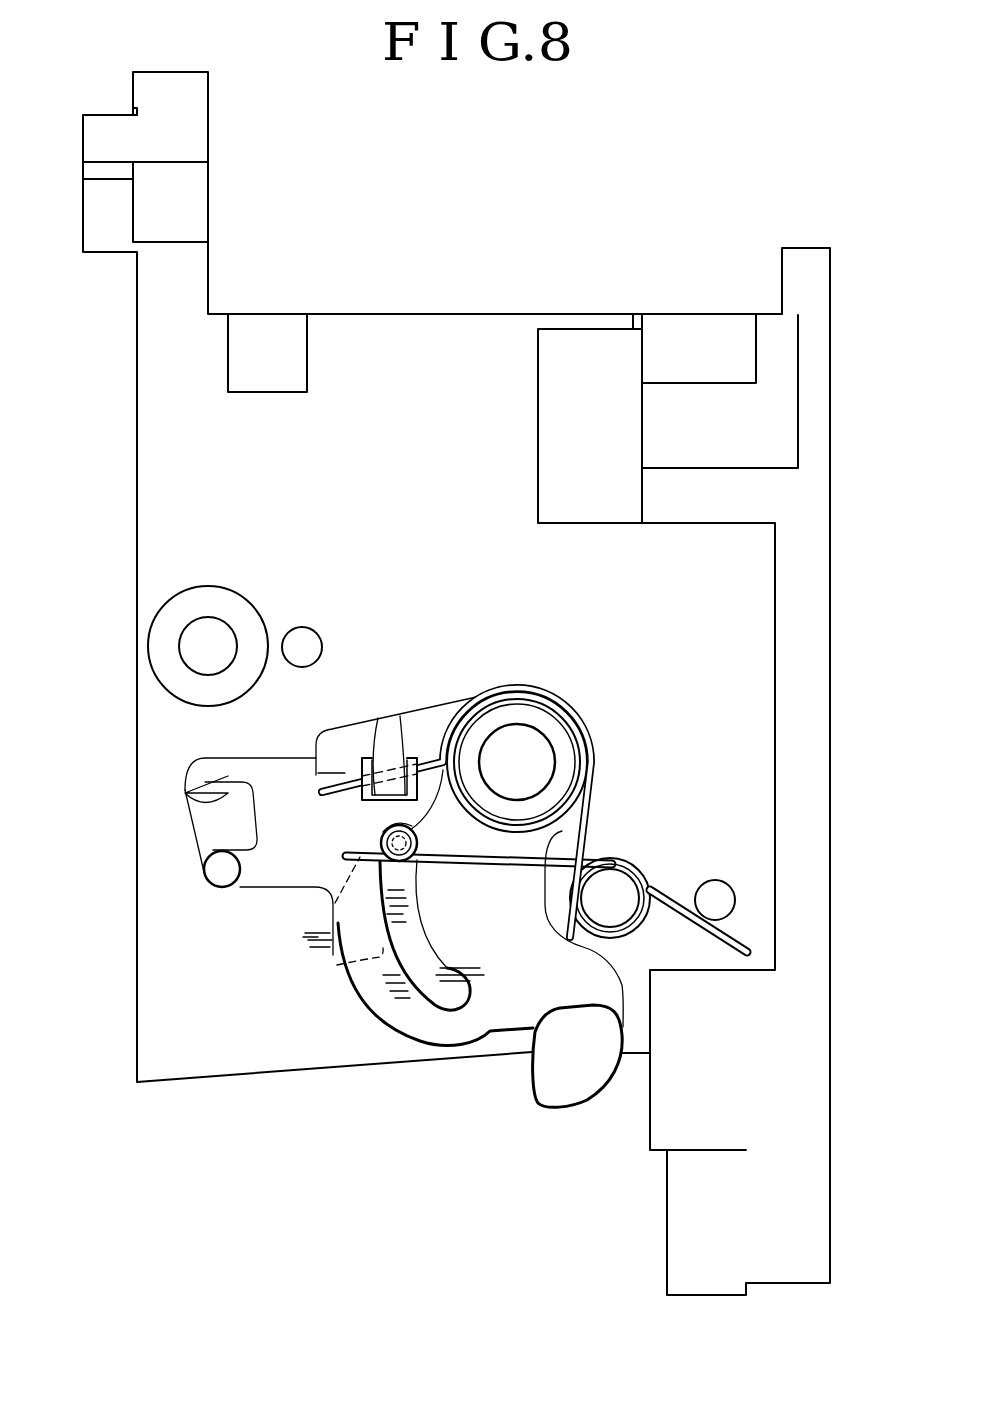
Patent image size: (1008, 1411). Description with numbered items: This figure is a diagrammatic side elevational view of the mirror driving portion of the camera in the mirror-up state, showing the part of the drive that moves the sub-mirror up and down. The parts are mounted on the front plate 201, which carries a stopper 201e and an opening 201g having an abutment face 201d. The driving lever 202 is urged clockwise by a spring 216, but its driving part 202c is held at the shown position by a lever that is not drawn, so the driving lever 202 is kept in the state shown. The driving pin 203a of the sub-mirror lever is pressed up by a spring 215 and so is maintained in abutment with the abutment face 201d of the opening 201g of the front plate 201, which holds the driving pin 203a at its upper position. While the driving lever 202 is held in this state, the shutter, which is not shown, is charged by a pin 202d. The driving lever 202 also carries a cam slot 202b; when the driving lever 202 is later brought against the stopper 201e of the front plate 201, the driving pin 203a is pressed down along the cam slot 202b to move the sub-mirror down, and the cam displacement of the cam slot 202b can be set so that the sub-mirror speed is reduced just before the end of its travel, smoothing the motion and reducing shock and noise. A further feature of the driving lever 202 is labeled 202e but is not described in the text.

The front plate 201 is at (483, 330).
The stopper 201e is at (304, 640).
The abutment face 201d is at (420, 712).
The opening 201g is at (413, 883).
The driving lever 202 is at (435, 722).
The cam slot 202b is at (417, 938).
The driving part 202c is at (563, 1090).
The pin 202d is at (207, 795).
The pin 202e is at (233, 880).
The driving pin 203a is at (378, 838).
The spring 215 is at (610, 862).
The spring 216 is at (577, 835).